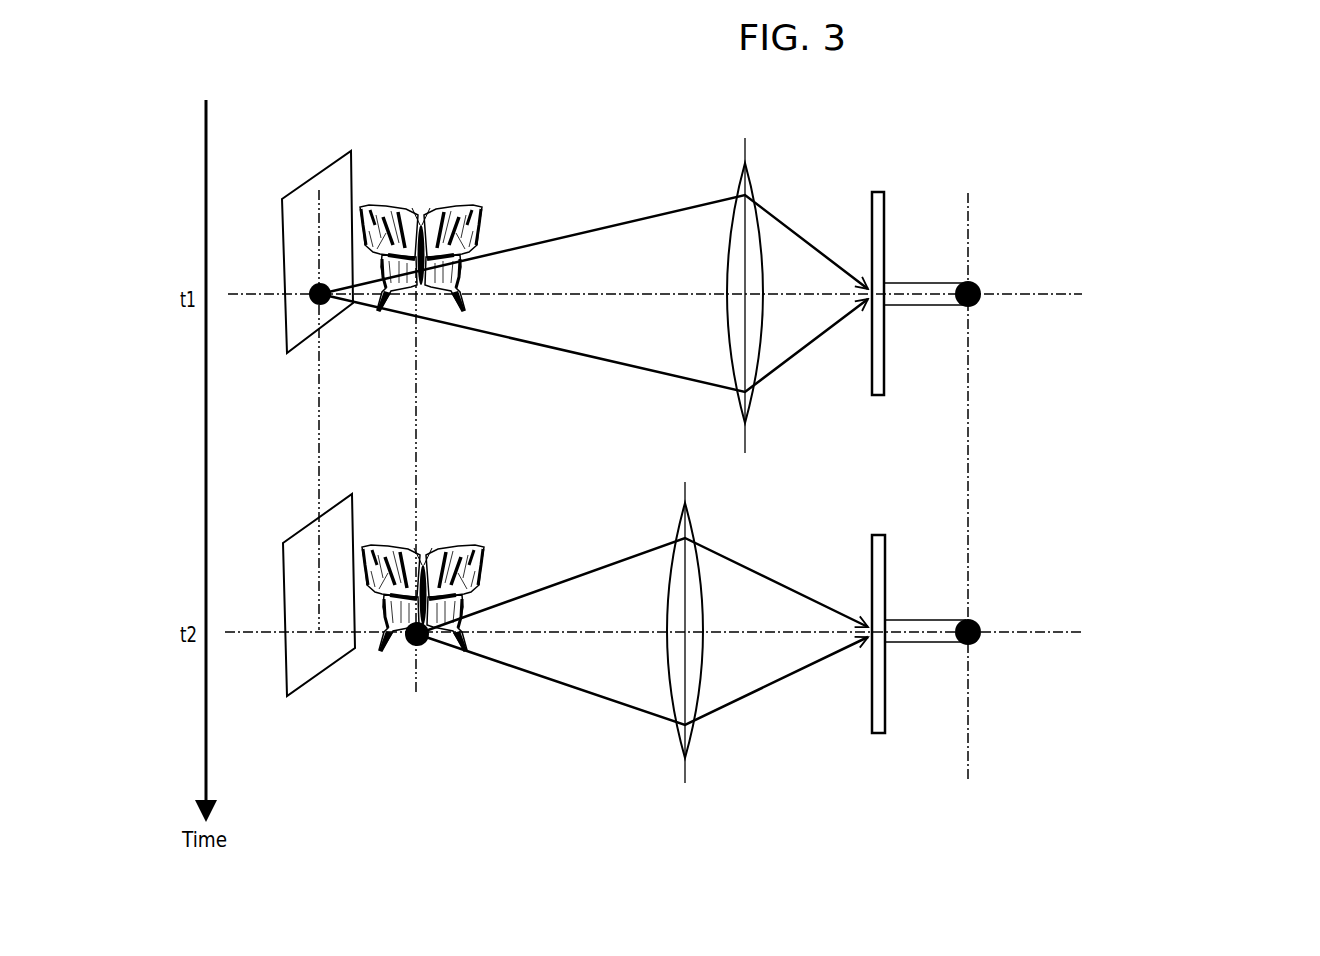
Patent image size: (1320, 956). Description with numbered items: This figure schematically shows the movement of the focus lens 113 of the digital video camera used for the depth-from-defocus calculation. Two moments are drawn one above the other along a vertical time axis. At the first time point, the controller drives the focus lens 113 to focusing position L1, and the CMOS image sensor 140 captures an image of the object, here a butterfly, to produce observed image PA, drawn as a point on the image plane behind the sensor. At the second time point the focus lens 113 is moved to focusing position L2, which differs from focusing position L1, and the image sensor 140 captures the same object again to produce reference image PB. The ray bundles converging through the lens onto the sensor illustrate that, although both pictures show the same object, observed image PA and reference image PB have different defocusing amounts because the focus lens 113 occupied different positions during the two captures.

The focus lens 113 is at (724, 460).
The CMOS image sensor 140 is at (879, 191).
The focusing position L1 is at (745, 312).
The focusing position L2 is at (685, 651).
The observed image PA is at (1115, 293).
The reference image PB is at (1119, 631).